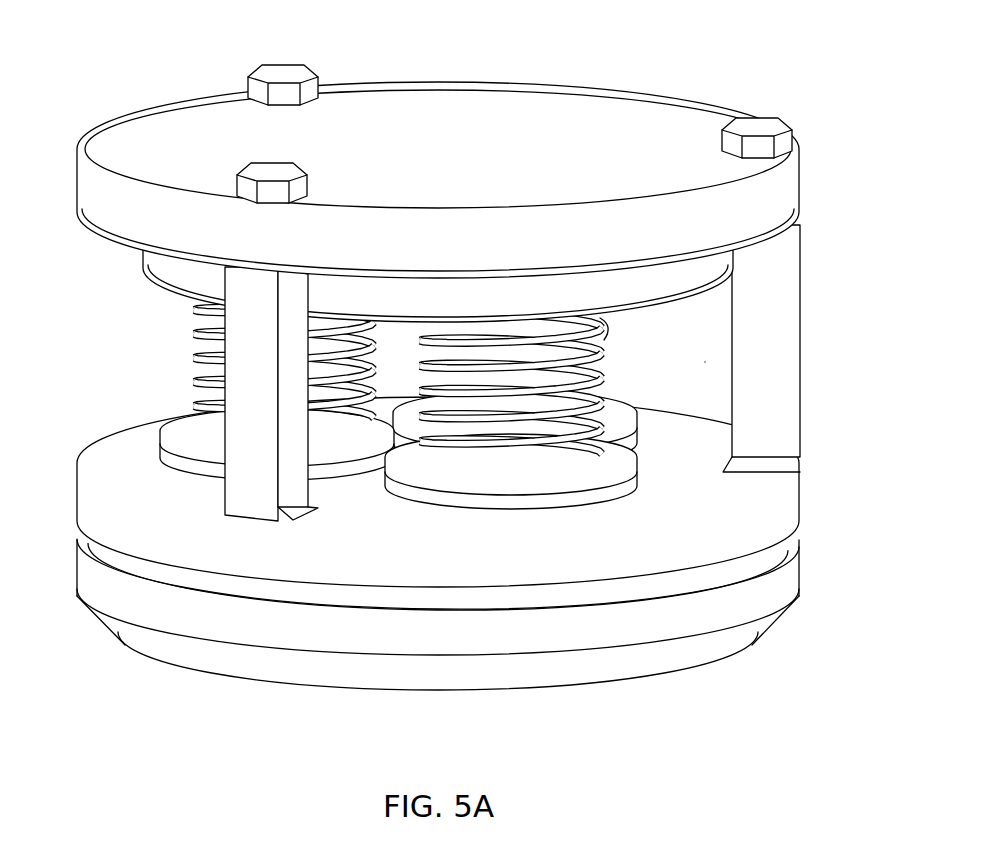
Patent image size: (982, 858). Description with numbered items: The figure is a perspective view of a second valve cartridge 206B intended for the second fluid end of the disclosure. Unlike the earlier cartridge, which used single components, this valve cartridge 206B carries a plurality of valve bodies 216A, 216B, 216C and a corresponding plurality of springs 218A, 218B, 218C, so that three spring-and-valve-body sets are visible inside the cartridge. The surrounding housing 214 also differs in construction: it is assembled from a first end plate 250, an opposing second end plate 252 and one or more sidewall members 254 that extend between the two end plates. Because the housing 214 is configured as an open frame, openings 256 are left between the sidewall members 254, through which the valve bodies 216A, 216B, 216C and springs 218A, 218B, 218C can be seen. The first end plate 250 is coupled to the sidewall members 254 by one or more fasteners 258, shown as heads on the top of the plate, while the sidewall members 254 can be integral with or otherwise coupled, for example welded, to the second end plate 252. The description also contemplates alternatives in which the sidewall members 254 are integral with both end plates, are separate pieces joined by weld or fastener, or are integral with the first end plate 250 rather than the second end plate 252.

The valve cartridge 206B is at (464, 385).
The housing 214 is at (438, 274).
The first end plate 250 is at (447, 129).
The second end plate 252 is at (310, 623).
The sidewall members 254 is at (765, 305).
The openings 256 is at (703, 360).
The fasteners 258 is at (758, 125).
The valve body 216A is at (513, 500).
The valve body 216B is at (185, 428).
The valve body 216C is at (617, 405).
The spring 218A is at (567, 452).
The spring 218B is at (188, 332).
The spring 218C is at (608, 343).